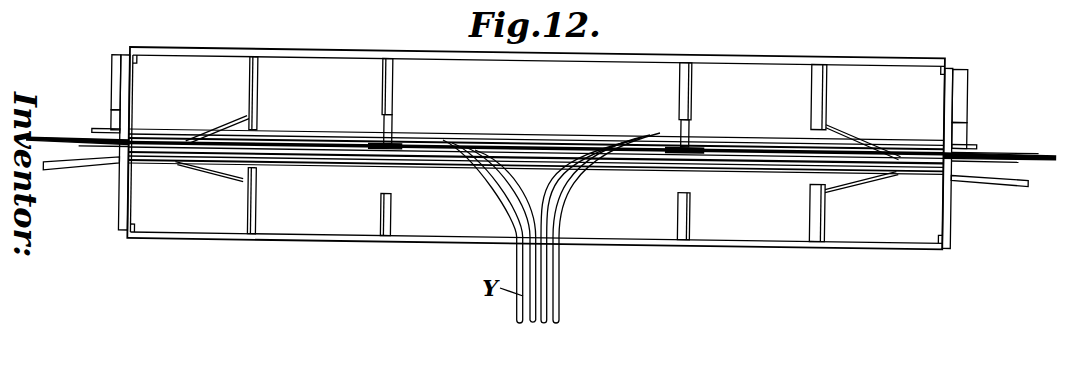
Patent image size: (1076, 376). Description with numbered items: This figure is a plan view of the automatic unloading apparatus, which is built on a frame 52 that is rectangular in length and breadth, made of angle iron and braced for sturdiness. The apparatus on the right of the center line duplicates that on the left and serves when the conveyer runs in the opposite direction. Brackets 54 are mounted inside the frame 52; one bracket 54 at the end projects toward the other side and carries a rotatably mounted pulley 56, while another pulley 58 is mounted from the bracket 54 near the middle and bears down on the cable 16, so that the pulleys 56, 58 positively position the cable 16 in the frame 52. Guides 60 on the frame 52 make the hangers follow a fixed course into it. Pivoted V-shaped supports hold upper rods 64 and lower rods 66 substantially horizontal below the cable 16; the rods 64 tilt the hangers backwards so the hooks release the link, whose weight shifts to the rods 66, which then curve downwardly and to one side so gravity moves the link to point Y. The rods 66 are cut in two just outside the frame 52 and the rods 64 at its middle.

The cable 16 is at (43, 138).
The frame 52 is at (312, 47).
The bracket 54 is at (113, 86).
The pulley 56 is at (93, 134).
The pulley 58 is at (400, 136).
The guide 60 is at (68, 148).
The upper rod 64 is at (508, 156).
The lower rod 66 is at (527, 207).